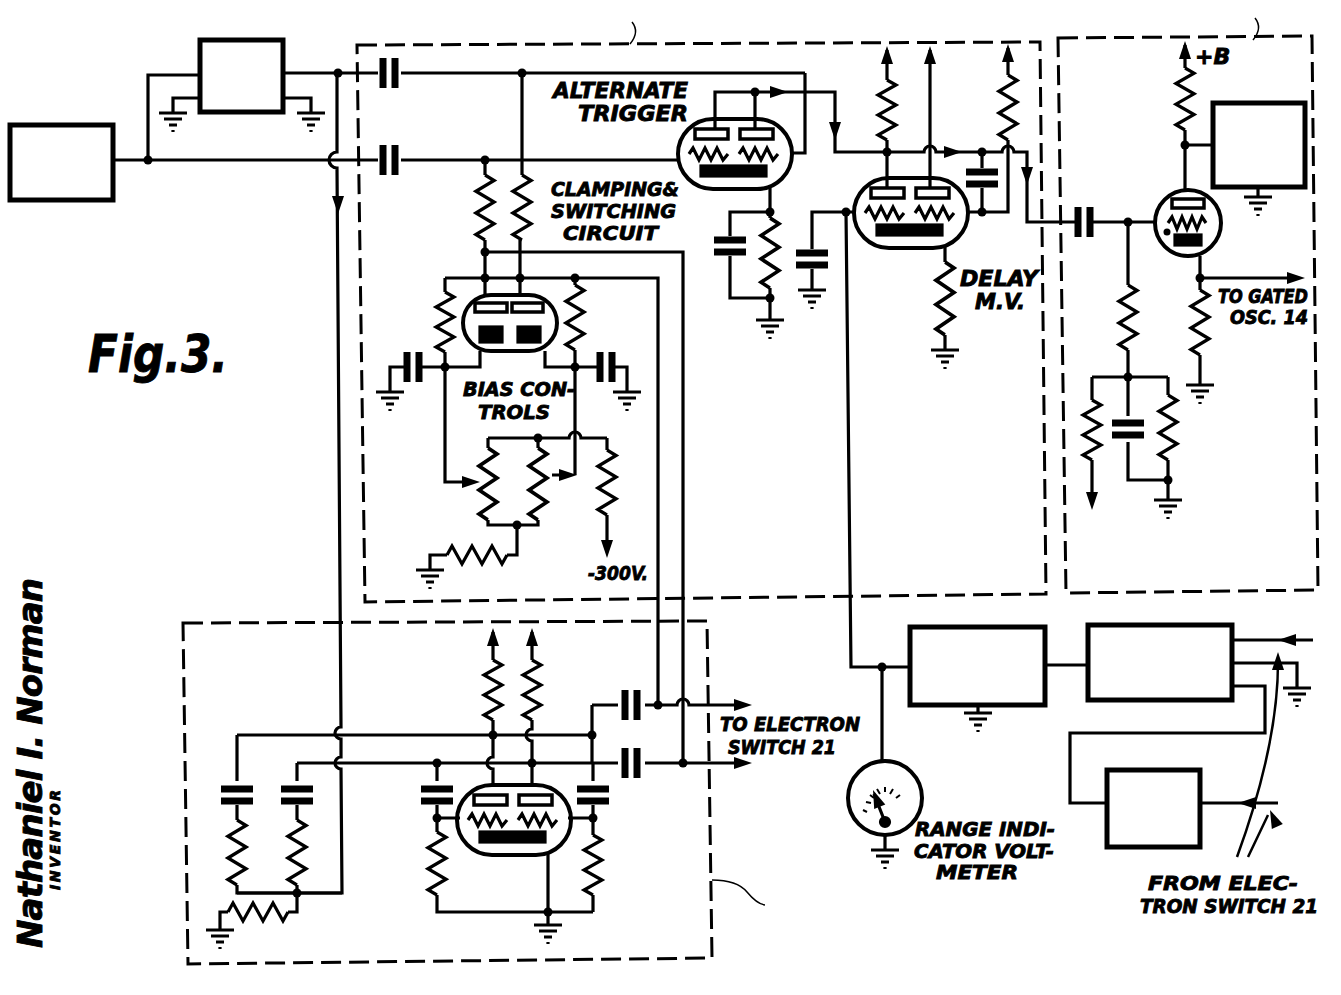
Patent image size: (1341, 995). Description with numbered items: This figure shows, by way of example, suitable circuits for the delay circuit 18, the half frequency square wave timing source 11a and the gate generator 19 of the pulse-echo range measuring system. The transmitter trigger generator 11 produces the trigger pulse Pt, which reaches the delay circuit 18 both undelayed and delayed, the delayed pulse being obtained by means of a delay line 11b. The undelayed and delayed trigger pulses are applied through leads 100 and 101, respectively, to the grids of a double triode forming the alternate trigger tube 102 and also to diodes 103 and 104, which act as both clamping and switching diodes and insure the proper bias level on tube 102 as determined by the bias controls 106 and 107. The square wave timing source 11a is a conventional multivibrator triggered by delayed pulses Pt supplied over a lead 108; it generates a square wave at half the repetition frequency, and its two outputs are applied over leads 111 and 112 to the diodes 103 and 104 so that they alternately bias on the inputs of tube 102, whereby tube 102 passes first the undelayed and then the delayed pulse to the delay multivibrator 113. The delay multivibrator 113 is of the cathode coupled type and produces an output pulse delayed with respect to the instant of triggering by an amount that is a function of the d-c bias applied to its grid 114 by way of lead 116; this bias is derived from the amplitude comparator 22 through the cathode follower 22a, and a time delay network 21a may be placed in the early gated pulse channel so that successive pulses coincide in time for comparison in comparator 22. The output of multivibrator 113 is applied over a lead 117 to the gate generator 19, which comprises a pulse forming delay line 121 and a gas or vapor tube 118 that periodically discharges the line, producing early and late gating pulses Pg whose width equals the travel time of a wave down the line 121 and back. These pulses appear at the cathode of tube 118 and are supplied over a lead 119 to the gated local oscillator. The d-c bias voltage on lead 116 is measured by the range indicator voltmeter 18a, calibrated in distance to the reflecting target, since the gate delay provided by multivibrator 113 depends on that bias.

The transmitter trigger generator 11 is at (78, 103).
The square wave timing source 11a is at (272, 624).
The delay line 11b is at (200, 52).
The delay circuit 18 is at (398, 43).
The range indicator meter 18a is at (928, 760).
The gate generator 19 is at (1080, 38).
The time delay network 21a is at (1099, 778).
The amplitude comparator 22 is at (1188, 620).
The cathode follower 22a is at (910, 641).
The lead 100 is at (455, 154).
The lead 101 is at (318, 62).
The alternate trigger tube 102 is at (682, 143).
The diode 103 is at (480, 300).
The diode 104 is at (604, 376).
The bias control 106 is at (465, 496).
The bias control 107 is at (557, 484).
The lead 108 is at (335, 260).
The lead 111 is at (660, 432).
The lead 112 is at (683, 502).
The delay multivibrator 113 is at (872, 138).
The grid 114 is at (862, 206).
The lead 116 is at (846, 370).
The lead 117 is at (1001, 150).
The gas or vapor tube 118 is at (1157, 208).
The lead 119 is at (1258, 262).
The pulse forming delay line 121 is at (1268, 88).